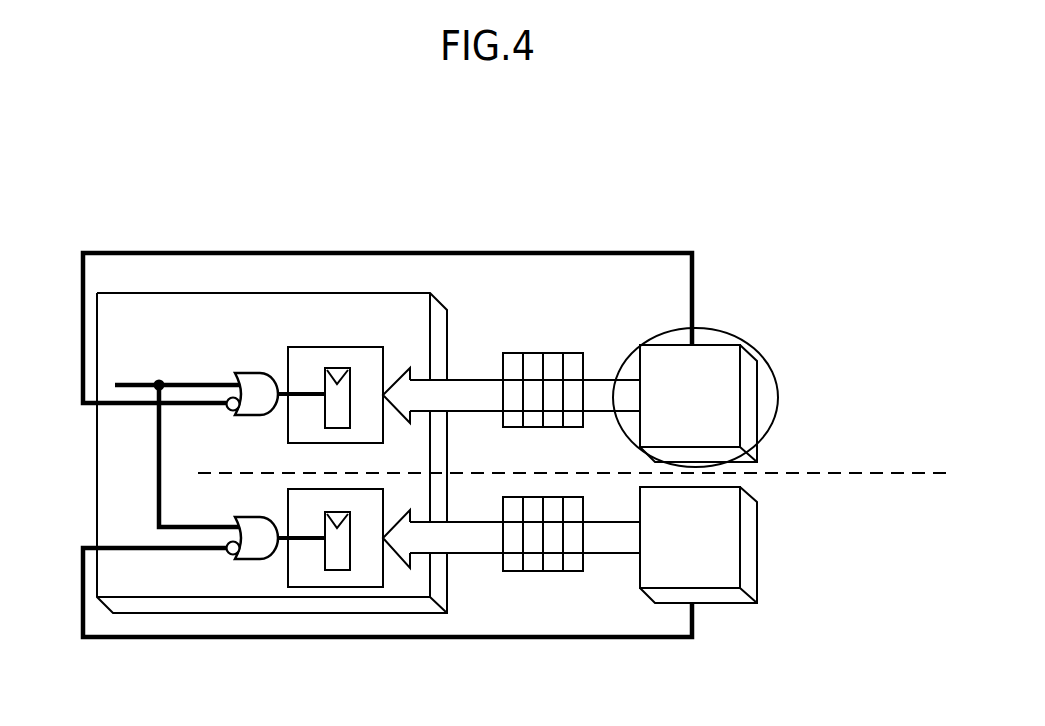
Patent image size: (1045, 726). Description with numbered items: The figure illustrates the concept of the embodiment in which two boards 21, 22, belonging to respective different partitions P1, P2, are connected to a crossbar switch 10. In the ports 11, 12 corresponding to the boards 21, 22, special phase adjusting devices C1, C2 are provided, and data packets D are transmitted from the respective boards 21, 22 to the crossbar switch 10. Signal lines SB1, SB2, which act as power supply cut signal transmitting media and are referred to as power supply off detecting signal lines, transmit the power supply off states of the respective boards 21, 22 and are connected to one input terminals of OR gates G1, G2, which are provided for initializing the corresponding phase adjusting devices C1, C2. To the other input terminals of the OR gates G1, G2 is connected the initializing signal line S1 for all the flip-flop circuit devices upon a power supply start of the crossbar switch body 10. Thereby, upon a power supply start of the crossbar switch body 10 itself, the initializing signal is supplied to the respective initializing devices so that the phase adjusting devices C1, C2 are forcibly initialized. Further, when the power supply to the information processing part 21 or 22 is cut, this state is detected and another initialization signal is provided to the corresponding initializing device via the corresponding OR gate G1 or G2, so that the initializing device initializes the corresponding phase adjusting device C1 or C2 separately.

The crossbar switch 10 is at (205, 293).
The initializing signal line S1 is at (147, 383).
The power supply off detecting signal line SB1 is at (120, 405).
The power supply off detecting signal line SB2 is at (120, 638).
The OR gate G1 is at (250, 373).
The OR gate G2 is at (245, 525).
The port 11 is at (290, 347).
The port 12 is at (288, 500).
The phase adjusting device C1 is at (340, 368).
The phase adjusting device C2 is at (350, 520).
The data packets D is at (577, 353).
The board 21 is at (740, 345).
The board 22 is at (757, 545).
The partition P1 is at (573, 456).
The partition P2 is at (928, 501).